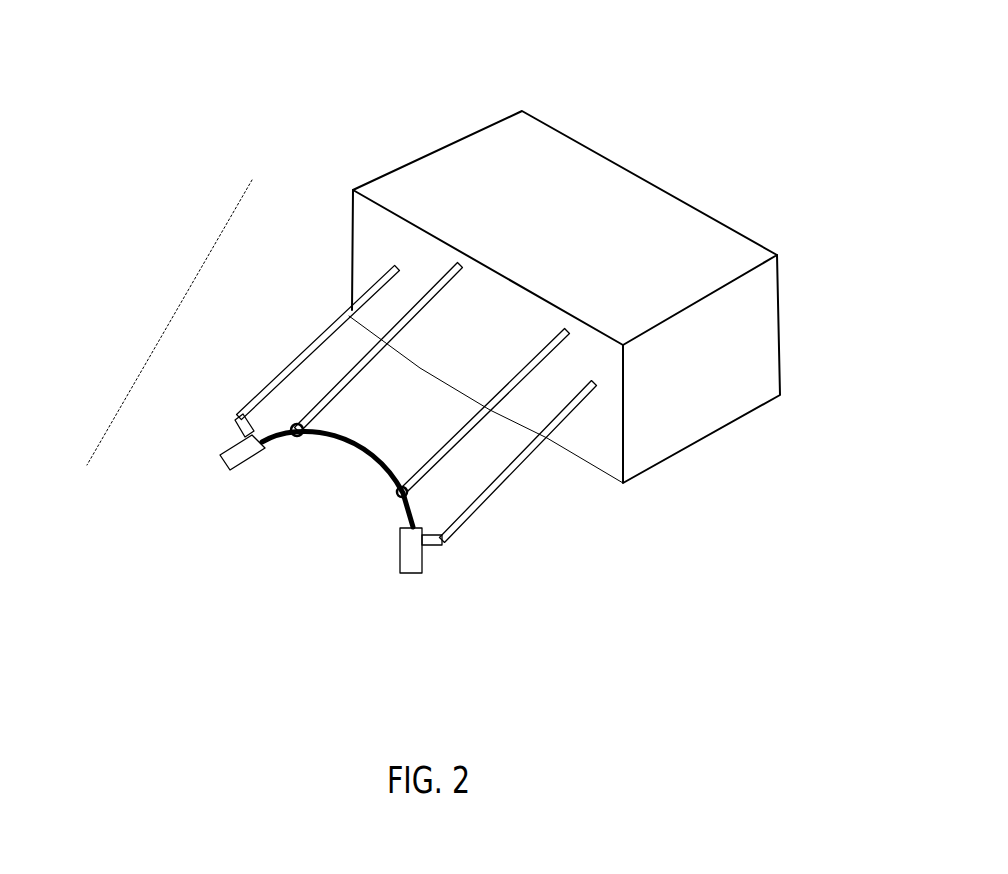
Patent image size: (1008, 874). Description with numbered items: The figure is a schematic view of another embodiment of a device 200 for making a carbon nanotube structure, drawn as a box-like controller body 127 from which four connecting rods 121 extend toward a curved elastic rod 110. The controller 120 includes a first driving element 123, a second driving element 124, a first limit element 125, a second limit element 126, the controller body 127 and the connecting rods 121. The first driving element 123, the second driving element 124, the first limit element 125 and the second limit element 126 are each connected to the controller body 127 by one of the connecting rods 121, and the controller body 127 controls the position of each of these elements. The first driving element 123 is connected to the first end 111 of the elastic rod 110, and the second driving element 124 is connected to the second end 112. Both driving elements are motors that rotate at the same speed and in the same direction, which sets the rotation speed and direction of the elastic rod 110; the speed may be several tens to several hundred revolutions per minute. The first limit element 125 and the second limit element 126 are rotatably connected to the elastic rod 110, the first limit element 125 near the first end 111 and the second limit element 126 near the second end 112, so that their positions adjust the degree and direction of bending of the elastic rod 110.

The assembly 200 is at (696, 66).
The elastic rod 110 is at (358, 448).
The first end 111 is at (270, 440).
The second end 112 is at (422, 527).
The controller 120 is at (172, 318).
The connecting rods 121 is at (348, 307).
The first driving element 123 is at (228, 447).
The second driving element 124 is at (400, 557).
The first limit element 125 is at (297, 424).
The second limit element 126 is at (402, 487).
The controller body 127 is at (372, 270).